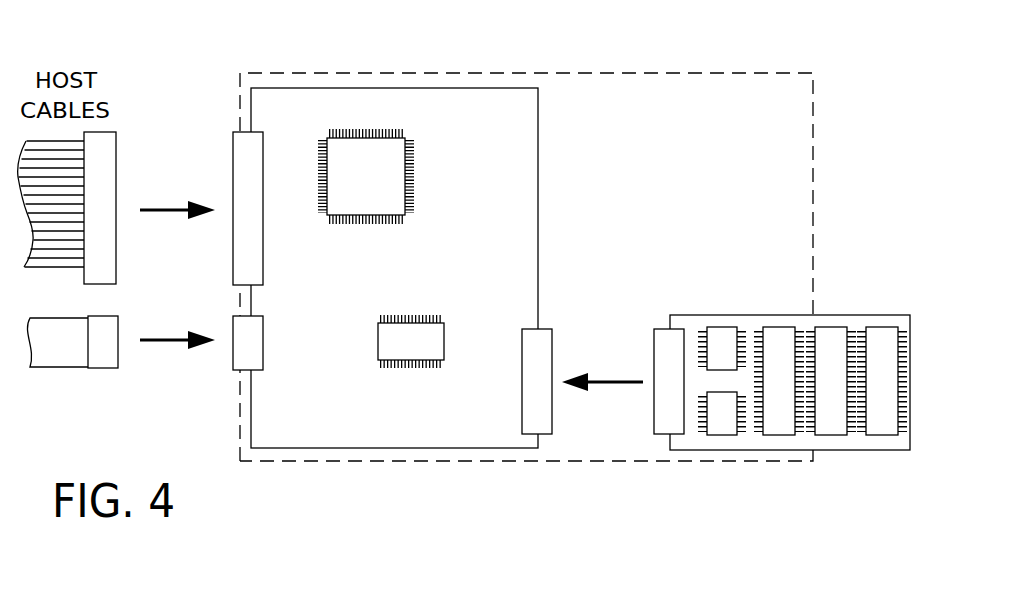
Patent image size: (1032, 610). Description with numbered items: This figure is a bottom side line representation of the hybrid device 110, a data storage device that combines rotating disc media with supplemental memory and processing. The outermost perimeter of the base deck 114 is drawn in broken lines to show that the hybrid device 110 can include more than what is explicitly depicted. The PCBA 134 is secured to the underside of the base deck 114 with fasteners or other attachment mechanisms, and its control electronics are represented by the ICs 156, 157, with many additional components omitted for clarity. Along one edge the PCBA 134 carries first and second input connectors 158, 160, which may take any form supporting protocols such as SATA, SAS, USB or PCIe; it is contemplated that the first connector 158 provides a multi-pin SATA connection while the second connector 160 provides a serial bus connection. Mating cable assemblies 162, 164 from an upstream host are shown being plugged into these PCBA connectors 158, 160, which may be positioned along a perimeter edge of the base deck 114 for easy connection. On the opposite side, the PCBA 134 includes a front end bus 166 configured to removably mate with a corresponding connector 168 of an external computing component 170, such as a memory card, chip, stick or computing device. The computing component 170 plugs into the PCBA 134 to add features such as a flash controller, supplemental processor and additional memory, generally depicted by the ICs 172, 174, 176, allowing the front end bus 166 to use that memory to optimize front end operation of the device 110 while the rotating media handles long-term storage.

The hybrid device 110 is at (138, 50).
The base deck 114 is at (686, 73).
The PCBA 134 is at (287, 85).
The IC 156 is at (391, 340).
The IC 157 is at (374, 158).
The first input connector 158 is at (232, 152).
The second input connector 160 is at (232, 357).
The mating cable assembly 162 is at (117, 157).
The mating cable assembly 164 is at (119, 354).
The front end bus 166 is at (553, 345).
The connector 168 is at (653, 350).
The external computing component 170 is at (683, 460).
The IC 172 is at (718, 332).
The IC 174 is at (843, 316).
The IC 176 is at (725, 428).